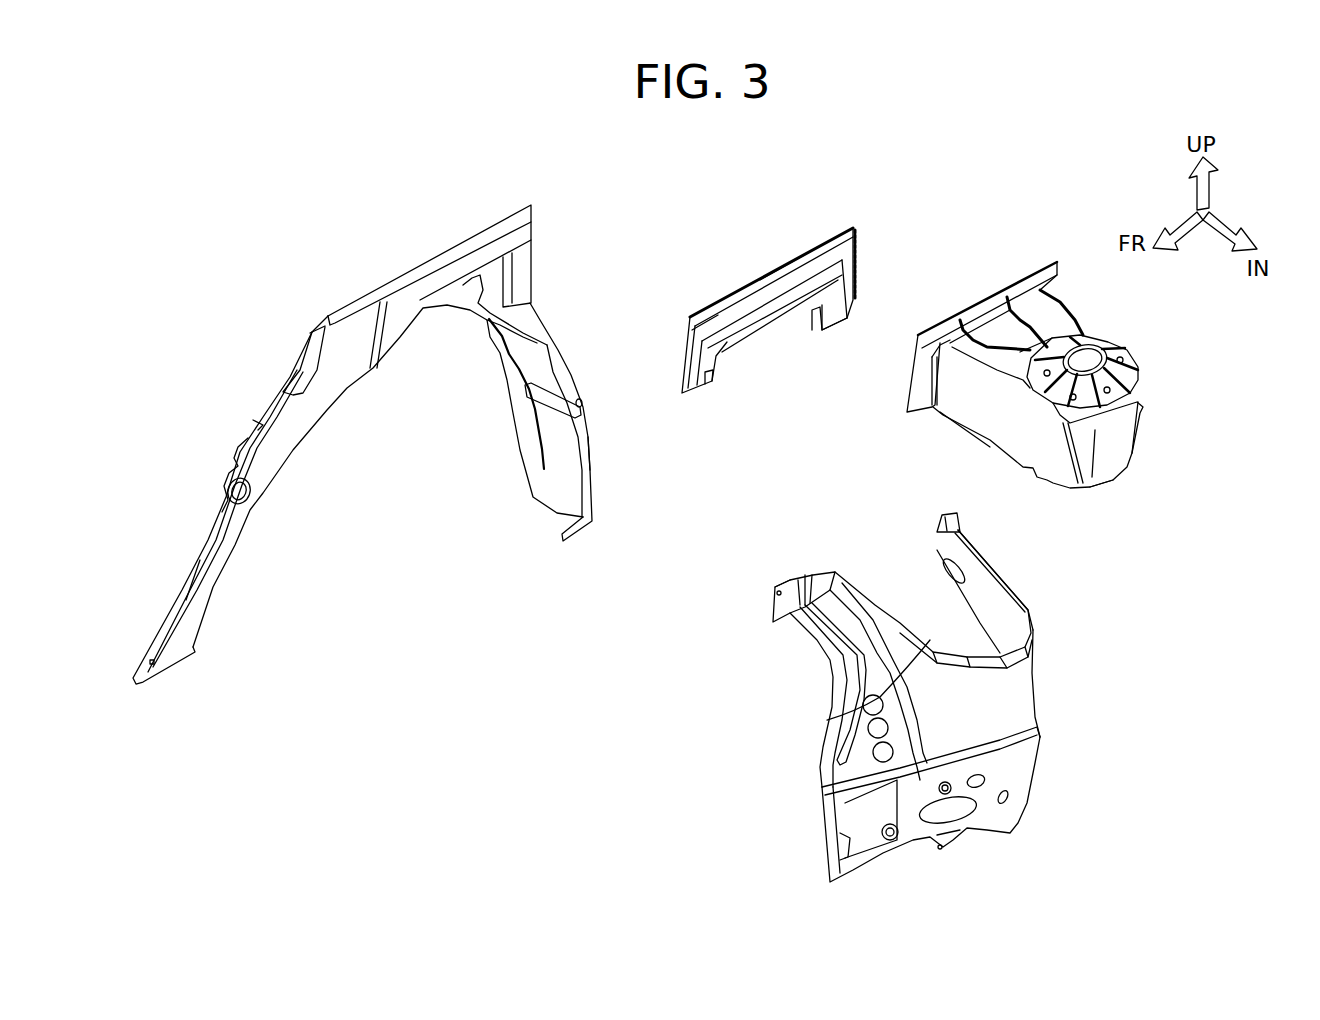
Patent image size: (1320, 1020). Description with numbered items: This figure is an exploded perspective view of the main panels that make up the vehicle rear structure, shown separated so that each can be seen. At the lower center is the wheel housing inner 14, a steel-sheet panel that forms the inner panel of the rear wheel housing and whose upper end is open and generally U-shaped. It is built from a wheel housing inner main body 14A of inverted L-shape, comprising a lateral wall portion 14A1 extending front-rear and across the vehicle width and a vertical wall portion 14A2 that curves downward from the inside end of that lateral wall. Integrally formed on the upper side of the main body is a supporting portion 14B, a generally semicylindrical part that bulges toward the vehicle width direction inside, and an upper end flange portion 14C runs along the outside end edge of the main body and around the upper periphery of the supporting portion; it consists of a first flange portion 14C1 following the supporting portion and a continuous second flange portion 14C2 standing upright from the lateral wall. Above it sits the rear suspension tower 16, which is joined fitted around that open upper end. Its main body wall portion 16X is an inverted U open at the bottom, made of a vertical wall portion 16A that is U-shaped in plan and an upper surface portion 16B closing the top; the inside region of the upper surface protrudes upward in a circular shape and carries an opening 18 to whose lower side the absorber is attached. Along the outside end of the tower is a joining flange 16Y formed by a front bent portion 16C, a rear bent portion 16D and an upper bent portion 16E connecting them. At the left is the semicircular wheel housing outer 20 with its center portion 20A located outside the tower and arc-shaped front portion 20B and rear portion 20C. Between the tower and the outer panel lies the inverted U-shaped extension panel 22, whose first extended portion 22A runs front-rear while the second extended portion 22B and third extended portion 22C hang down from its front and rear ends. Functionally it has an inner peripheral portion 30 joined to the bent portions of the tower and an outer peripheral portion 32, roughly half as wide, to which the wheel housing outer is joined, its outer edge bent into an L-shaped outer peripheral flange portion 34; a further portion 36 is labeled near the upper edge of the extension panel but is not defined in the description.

The wheel housing inner 14 is at (1058, 781).
The wheel housing inner main body 14A is at (697, 722).
The lateral wall portion 14A1 is at (820, 630).
The vertical wall portion 14A2 is at (862, 814).
The supporting portion 14B is at (995, 703).
The upper end flange portion 14C is at (997, 562).
The first flange portion 14C1 is at (1013, 590).
The second flange portion 14C2 is at (940, 514).
The rear suspension tower 16 is at (1167, 427).
The vertical wall portion 16A is at (997, 437).
The upper surface portion 16B is at (1037, 313).
The front bent portion 16C is at (922, 383).
The rear bent portion 16D is at (1050, 300).
The upper bent portion 16E is at (980, 313).
The main body wall portion 16X is at (1132, 472).
The joining flange 16Y is at (1043, 262).
The opening 18 is at (1105, 340).
The wheel housing outer 20 is at (283, 290).
The center portion 20A is at (450, 270).
The front portion 20B is at (220, 553).
The rear portion 20C is at (586, 463).
The extension panel 22 is at (827, 220).
The first extended portion 22A is at (752, 305).
The second extended portion 22B is at (712, 362).
The third extended portion 22C is at (828, 310).
The inner peripheral portion 30 is at (768, 300).
The outer peripheral portion 32 is at (718, 310).
The outer peripheral flange portion 34 is at (858, 265).
The upper flange 36 is at (800, 262).